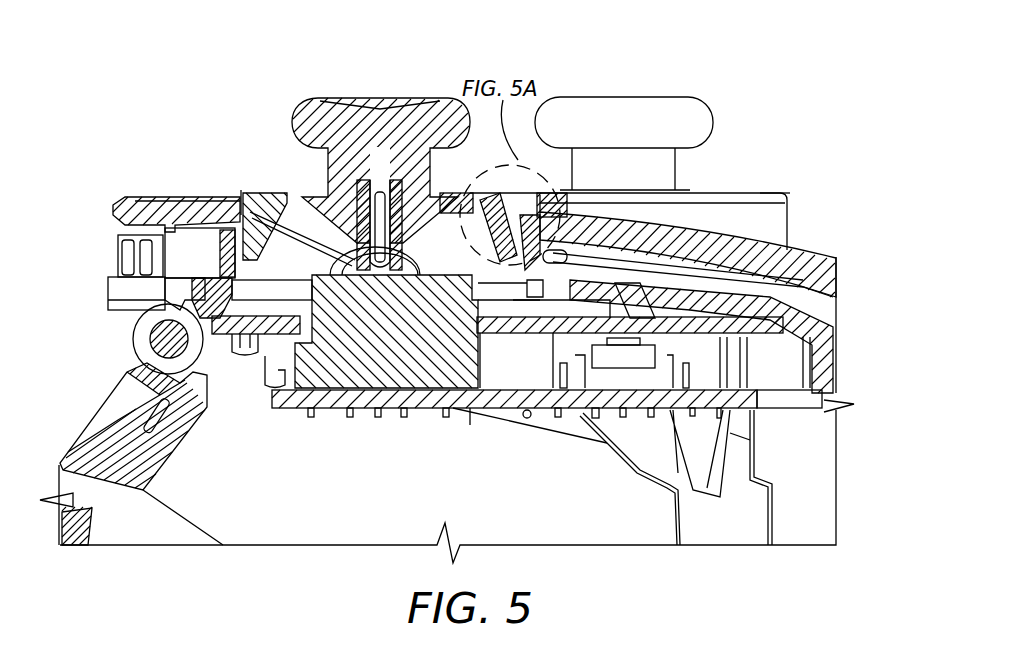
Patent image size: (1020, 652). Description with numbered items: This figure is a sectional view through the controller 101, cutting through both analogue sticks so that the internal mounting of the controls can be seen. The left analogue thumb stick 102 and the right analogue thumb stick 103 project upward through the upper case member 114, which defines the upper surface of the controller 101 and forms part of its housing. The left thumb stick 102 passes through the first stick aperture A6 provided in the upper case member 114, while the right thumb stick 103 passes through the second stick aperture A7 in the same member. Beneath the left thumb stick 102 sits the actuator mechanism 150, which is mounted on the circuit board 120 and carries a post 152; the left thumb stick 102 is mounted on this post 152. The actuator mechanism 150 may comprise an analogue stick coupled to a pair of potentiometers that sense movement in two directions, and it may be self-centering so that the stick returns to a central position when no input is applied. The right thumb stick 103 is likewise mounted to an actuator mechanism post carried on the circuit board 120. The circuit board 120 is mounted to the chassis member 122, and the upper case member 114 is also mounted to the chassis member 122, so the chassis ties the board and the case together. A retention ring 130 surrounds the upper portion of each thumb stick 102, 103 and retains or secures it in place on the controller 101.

The controller 101 is at (200, 60).
The left analogue thumb stick 102 is at (378, 104).
The right analogue thumb stick 103 is at (625, 105).
The upper case member 114 is at (133, 200).
The circuit board 120 is at (508, 402).
The chassis member 122 is at (112, 296).
The retention ring 130 is at (262, 197).
The actuator mechanism 150 is at (390, 347).
The post 152 is at (350, 258).
The first stick aperture A6 is at (240, 186).
The second stick aperture A7 is at (764, 188).